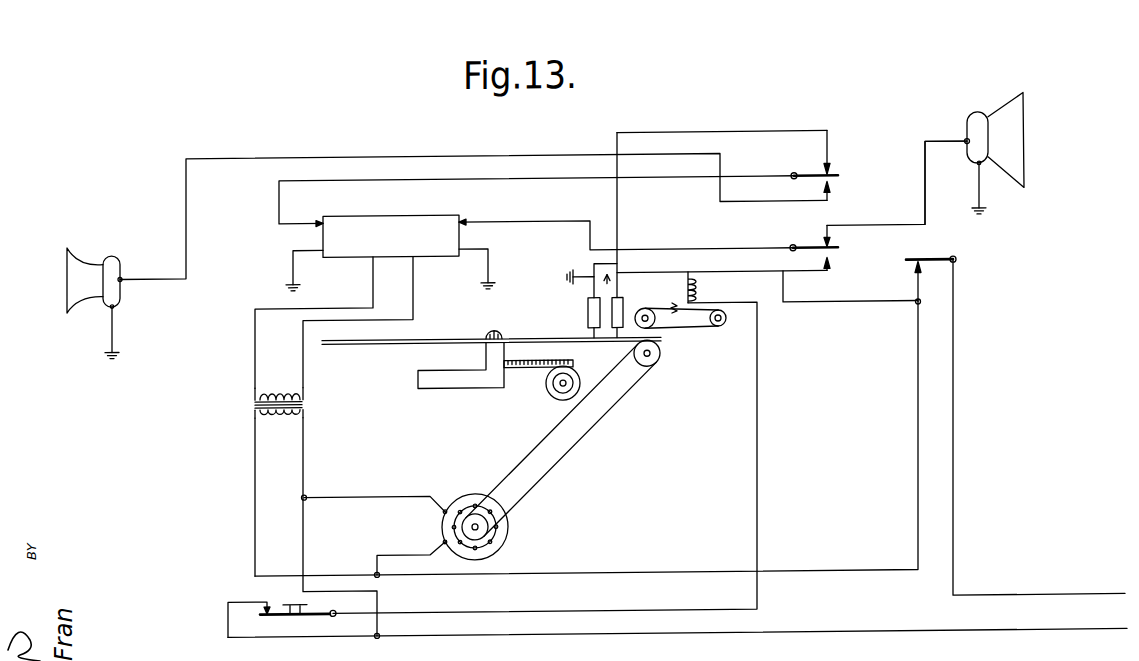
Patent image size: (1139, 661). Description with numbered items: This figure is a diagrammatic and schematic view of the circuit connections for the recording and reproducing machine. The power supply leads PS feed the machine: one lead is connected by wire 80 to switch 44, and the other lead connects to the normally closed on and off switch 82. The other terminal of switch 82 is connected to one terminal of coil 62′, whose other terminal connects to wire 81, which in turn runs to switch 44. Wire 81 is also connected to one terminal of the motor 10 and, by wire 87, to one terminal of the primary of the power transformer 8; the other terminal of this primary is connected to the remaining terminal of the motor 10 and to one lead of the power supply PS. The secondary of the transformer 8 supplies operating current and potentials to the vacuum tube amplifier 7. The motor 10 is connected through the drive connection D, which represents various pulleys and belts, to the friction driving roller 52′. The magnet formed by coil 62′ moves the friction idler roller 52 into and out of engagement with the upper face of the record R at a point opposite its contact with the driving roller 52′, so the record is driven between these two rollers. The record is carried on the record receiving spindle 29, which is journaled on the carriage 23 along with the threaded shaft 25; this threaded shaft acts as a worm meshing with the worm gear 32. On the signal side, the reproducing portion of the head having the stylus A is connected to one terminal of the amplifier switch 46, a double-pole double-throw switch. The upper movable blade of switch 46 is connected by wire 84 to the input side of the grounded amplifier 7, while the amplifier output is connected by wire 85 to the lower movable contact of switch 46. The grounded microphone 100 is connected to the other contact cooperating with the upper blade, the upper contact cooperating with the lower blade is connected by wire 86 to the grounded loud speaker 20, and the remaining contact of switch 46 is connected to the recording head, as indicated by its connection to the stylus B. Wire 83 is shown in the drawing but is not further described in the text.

The microphone 100 is at (67, 281).
The vacuum tube amplifier 7 is at (391, 236).
The conductor 83 is at (617, 230).
The wire 84 is at (660, 179).
The wire 85 is at (735, 254).
The amplifier switch 46 is at (819, 200).
The wire 86 is at (935, 144).
The loud speaker 20 is at (1007, 113).
The switch 44 is at (935, 254).
The wire 81 is at (918, 378).
The wire 80 is at (953, 494).
The power supply leads PS is at (677, 617).
The stylus A is at (588, 310).
The stylus B is at (623, 301).
The friction idler roller 52 is at (654, 308).
The coil 62′ is at (706, 294).
The record R is at (451, 334).
The record receiving spindle 29 is at (496, 322).
The carriage 23 is at (421, 387).
The threaded shaft 25 is at (517, 367).
The worm gear 32 is at (577, 377).
The friction driving roller 52′ is at (661, 356).
The drive connection D is at (590, 432).
The motor 10 is at (503, 535).
The power transformer 8 is at (303, 401).
The wire 87 is at (255, 527).
The on and off switch 82 is at (293, 615).